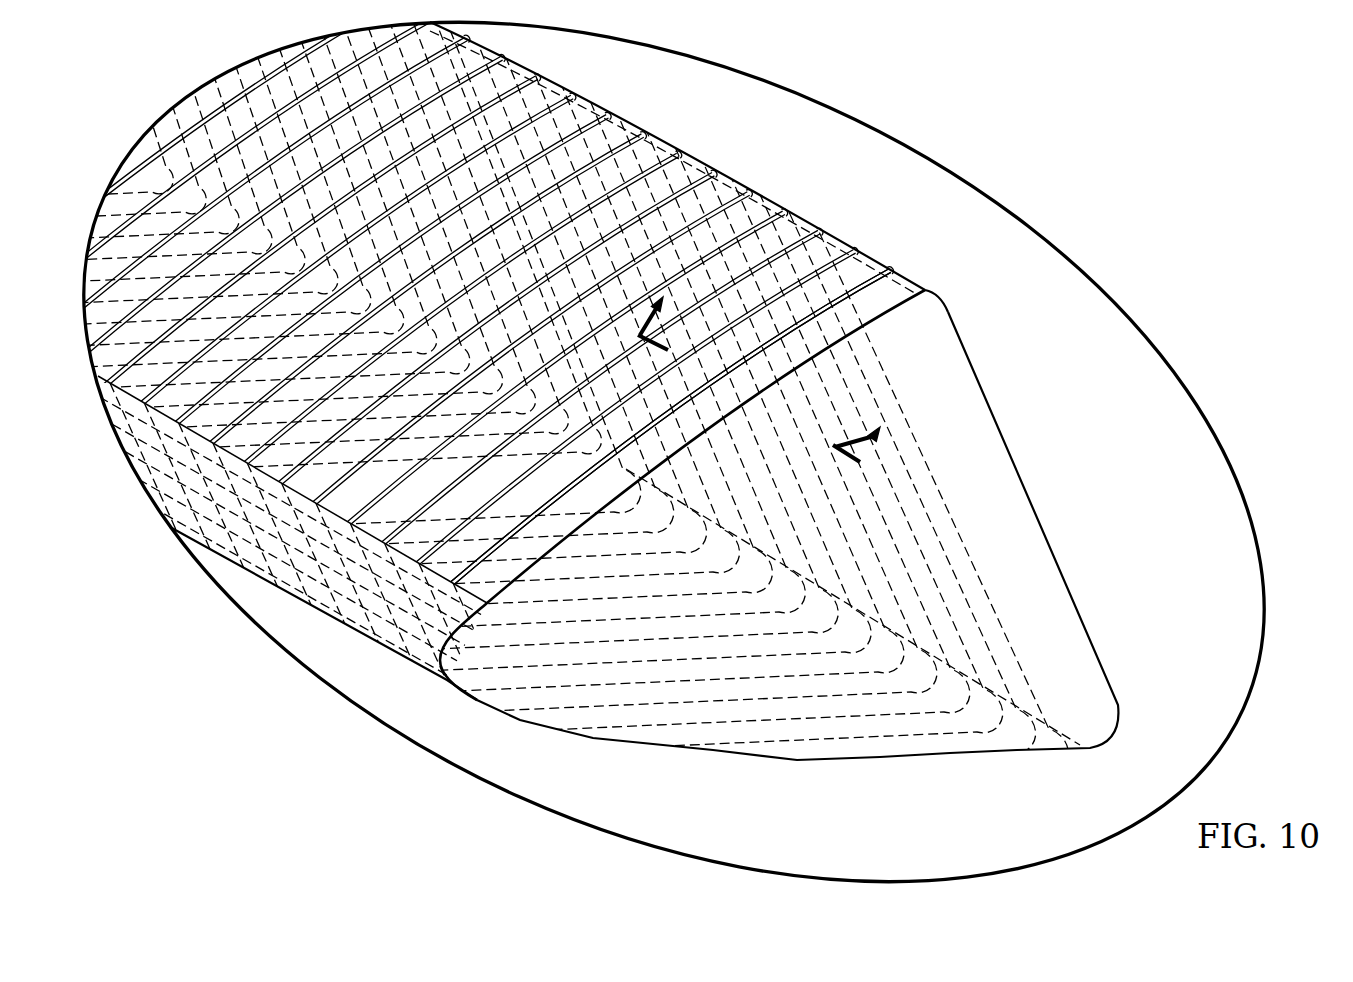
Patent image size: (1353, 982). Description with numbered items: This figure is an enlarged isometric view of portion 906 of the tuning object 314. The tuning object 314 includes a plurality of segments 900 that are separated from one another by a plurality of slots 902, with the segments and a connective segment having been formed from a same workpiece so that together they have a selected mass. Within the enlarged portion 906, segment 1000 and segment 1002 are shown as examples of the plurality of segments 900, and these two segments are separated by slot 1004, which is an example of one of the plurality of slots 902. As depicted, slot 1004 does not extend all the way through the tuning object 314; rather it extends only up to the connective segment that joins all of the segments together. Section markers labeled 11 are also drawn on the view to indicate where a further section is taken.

The tuning object 314 is at (224, 82).
The portion 906 is at (866, 121).
The plurality of segments 900 is at (780, 196).
The plurality of slots 902 is at (710, 205).
The segment 1000 is at (907, 278).
The segment 1002 is at (838, 262).
The slot 1004 is at (857, 273).
The section line 11- 11 is at (765, 366).